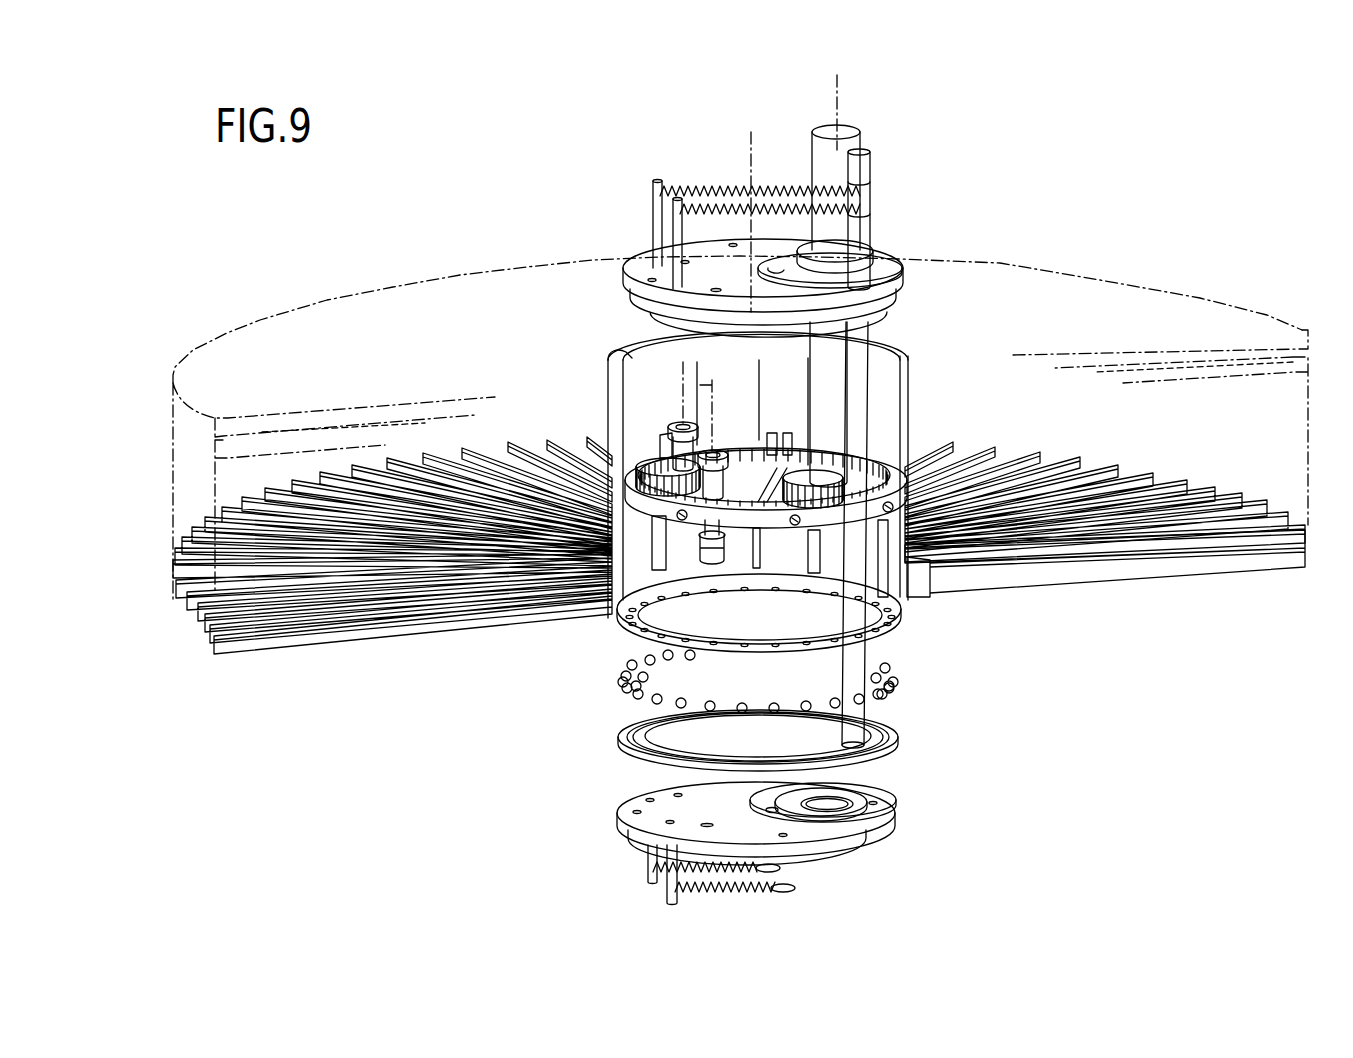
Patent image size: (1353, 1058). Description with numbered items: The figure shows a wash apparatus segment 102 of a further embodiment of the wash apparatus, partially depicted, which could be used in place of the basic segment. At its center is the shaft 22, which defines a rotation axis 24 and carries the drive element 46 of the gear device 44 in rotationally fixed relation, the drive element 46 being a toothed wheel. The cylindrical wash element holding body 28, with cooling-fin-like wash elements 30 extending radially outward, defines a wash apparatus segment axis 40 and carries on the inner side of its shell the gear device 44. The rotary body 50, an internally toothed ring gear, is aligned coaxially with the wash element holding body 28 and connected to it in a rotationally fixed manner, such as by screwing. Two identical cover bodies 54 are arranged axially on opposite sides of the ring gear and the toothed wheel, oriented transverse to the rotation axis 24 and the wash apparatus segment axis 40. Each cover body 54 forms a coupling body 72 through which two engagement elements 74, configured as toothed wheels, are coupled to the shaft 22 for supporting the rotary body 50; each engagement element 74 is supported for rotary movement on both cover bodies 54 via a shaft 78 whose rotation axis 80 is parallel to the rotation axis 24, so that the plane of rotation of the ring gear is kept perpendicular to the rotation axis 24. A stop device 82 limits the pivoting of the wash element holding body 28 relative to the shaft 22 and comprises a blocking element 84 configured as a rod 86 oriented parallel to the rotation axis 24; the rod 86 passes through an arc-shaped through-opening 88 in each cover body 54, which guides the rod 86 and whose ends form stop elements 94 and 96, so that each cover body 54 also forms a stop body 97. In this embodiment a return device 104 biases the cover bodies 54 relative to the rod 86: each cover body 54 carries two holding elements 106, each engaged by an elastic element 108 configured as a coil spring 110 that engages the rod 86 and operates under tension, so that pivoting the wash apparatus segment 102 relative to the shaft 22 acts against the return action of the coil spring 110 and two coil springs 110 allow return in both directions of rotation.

The shaft 22 is at (827, 142).
The rotation axis 24 is at (838, 106).
The wash element holding body 28 is at (612, 356).
The cooling fins 30 is at (336, 610).
The wash apparatus segment axis 40 is at (751, 132).
The gear device 44 is at (885, 470).
The drive element 46 is at (797, 473).
The rotary body 50 is at (912, 483).
The cover body 54 is at (660, 270).
The coupling body 72 is at (792, 303).
The engagement element 74 is at (763, 513).
The shaft 78 is at (686, 458).
The rotation axis 80 is at (683, 362).
The stop device 82 is at (880, 272).
The blocking element 84 is at (870, 170).
The rod 86 is at (894, 203).
The through-opening 88 is at (775, 273).
The stop element 94 is at (873, 273).
The stop element 96 is at (833, 790).
The stop body 97 is at (770, 293).
The wash apparatus segment 102 is at (898, 411).
The return device 104 is at (645, 185).
The holding element 106 is at (681, 233).
The elastic element 108 is at (720, 205).
The coil spring 110 is at (790, 205).